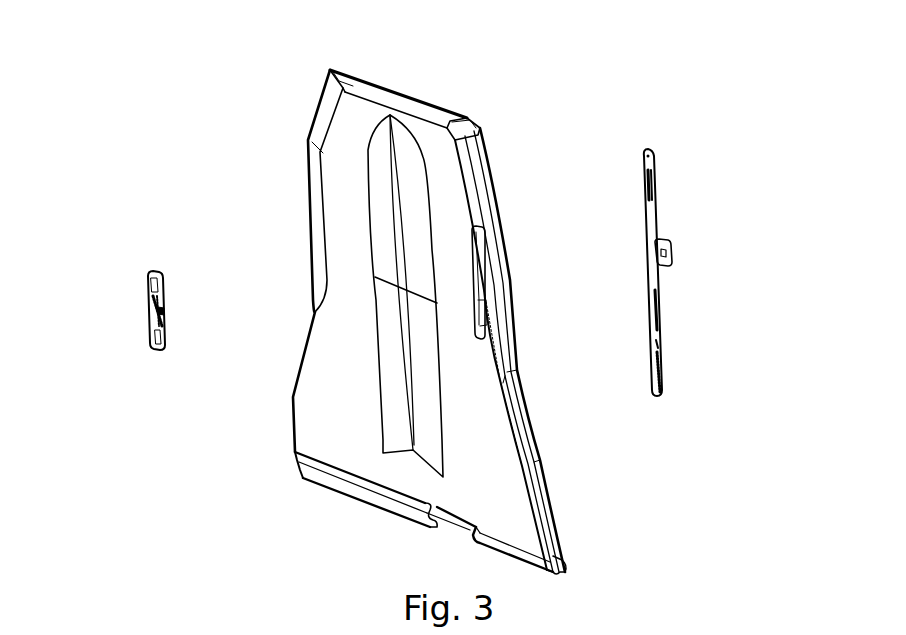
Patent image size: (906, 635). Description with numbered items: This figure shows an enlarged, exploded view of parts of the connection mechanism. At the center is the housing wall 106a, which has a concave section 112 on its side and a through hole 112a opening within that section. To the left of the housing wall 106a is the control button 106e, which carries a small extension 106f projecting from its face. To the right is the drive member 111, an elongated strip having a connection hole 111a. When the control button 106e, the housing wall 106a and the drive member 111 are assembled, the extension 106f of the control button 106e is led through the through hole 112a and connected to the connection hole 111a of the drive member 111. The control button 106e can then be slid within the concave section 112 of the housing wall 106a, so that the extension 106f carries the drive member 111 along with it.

The housing wall 106a is at (395, 98).
The control button 106e is at (148, 273).
The extension 106f is at (162, 311).
The drive member 111 is at (645, 148).
The connection hole 111a is at (667, 253).
The concave section 112 is at (473, 237).
The through hole 112a is at (475, 280).